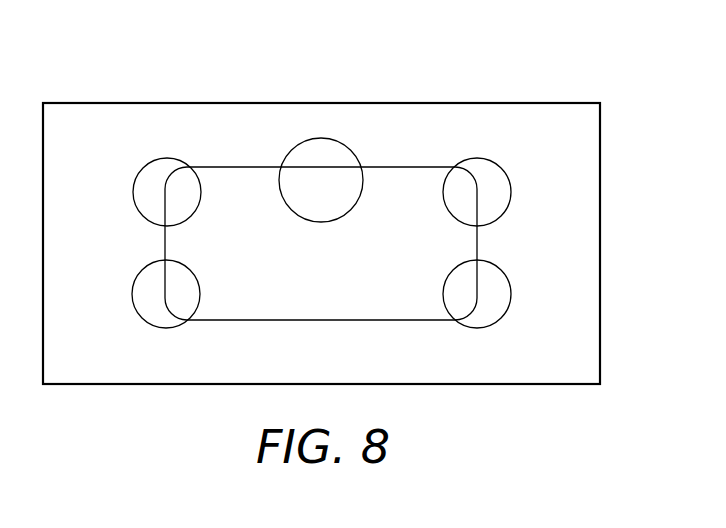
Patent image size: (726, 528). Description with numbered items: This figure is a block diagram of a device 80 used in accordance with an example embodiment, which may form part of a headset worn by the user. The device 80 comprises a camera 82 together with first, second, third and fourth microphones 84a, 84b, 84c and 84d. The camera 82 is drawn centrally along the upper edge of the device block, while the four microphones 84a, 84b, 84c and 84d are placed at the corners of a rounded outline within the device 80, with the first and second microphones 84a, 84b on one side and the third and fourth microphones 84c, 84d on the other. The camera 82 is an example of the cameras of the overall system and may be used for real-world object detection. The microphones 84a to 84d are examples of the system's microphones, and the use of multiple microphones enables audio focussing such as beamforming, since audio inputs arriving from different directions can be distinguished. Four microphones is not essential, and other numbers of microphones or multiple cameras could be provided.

The device 80 is at (554, 69).
The camera 82 is at (320, 138).
The first microphone 84a is at (133, 192).
The second microphone 84b is at (132, 294).
The third microphone 84c is at (511, 192).
The fourth microphone 84d is at (511, 294).